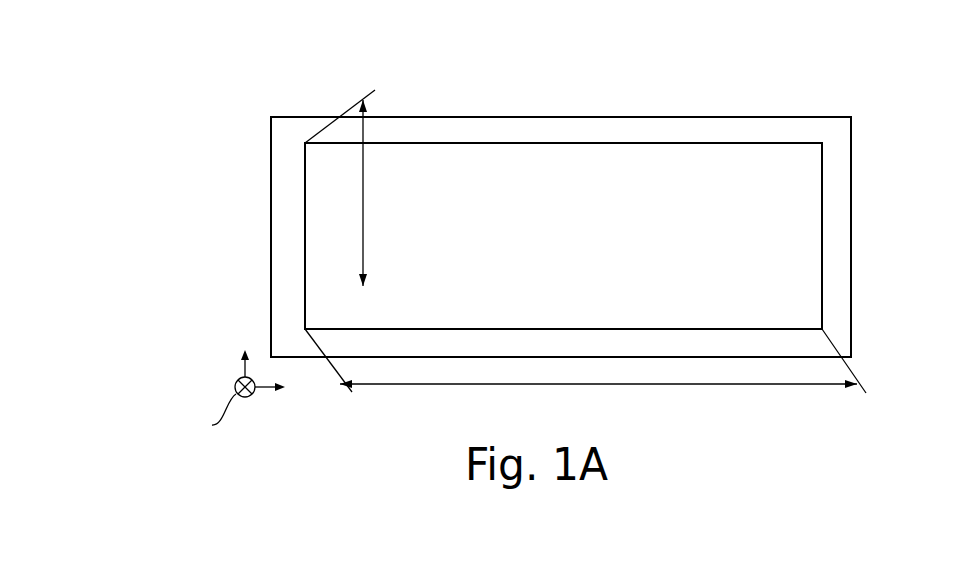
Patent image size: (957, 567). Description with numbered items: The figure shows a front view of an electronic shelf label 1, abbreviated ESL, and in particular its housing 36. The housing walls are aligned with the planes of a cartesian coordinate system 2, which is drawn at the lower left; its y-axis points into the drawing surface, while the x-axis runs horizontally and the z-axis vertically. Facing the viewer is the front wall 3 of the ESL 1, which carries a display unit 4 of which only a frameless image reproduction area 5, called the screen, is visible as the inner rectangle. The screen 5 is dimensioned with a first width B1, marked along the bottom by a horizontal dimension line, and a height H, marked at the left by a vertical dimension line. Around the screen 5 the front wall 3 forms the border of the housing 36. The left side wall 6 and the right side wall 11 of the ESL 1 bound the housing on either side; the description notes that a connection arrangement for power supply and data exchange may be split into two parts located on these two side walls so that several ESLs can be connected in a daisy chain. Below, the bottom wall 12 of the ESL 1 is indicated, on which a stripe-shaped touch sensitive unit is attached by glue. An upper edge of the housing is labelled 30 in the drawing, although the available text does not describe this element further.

The electronic shelf label 1 is at (856, 114).
The cartesian coordinate system 2 is at (271, 432).
The front wall 3 is at (779, 131).
The display unit 4 is at (735, 137).
The frameless image reproduction area 5 is at (659, 167).
The left side wall 6 is at (283, 134).
The right side wall 11 is at (851, 228).
The bottom wall 12 is at (310, 358).
The top outer edge 30 is at (398, 116).
The housing 36 is at (851, 357).
The height H is at (363, 204).
The first width B1 is at (615, 384).